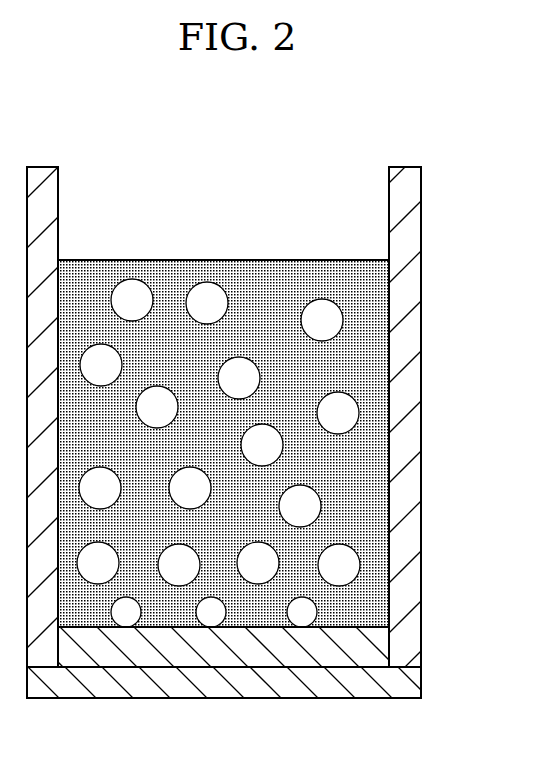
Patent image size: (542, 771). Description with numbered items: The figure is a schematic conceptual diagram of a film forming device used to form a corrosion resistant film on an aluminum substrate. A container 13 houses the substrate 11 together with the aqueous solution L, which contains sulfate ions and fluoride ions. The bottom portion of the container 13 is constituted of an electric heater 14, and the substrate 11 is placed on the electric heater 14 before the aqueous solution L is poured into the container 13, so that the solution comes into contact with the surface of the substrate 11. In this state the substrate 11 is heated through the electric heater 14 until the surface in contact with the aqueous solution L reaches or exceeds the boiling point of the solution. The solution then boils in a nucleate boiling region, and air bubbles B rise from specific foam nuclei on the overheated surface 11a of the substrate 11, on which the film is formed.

The substrate 11 is at (277, 653).
The overheated surface 11a is at (332, 627).
The container 13 is at (408, 577).
The electric heater 14 is at (163, 682).
The aqueous solution L is at (368, 502).
The air bubbles B is at (123, 617).